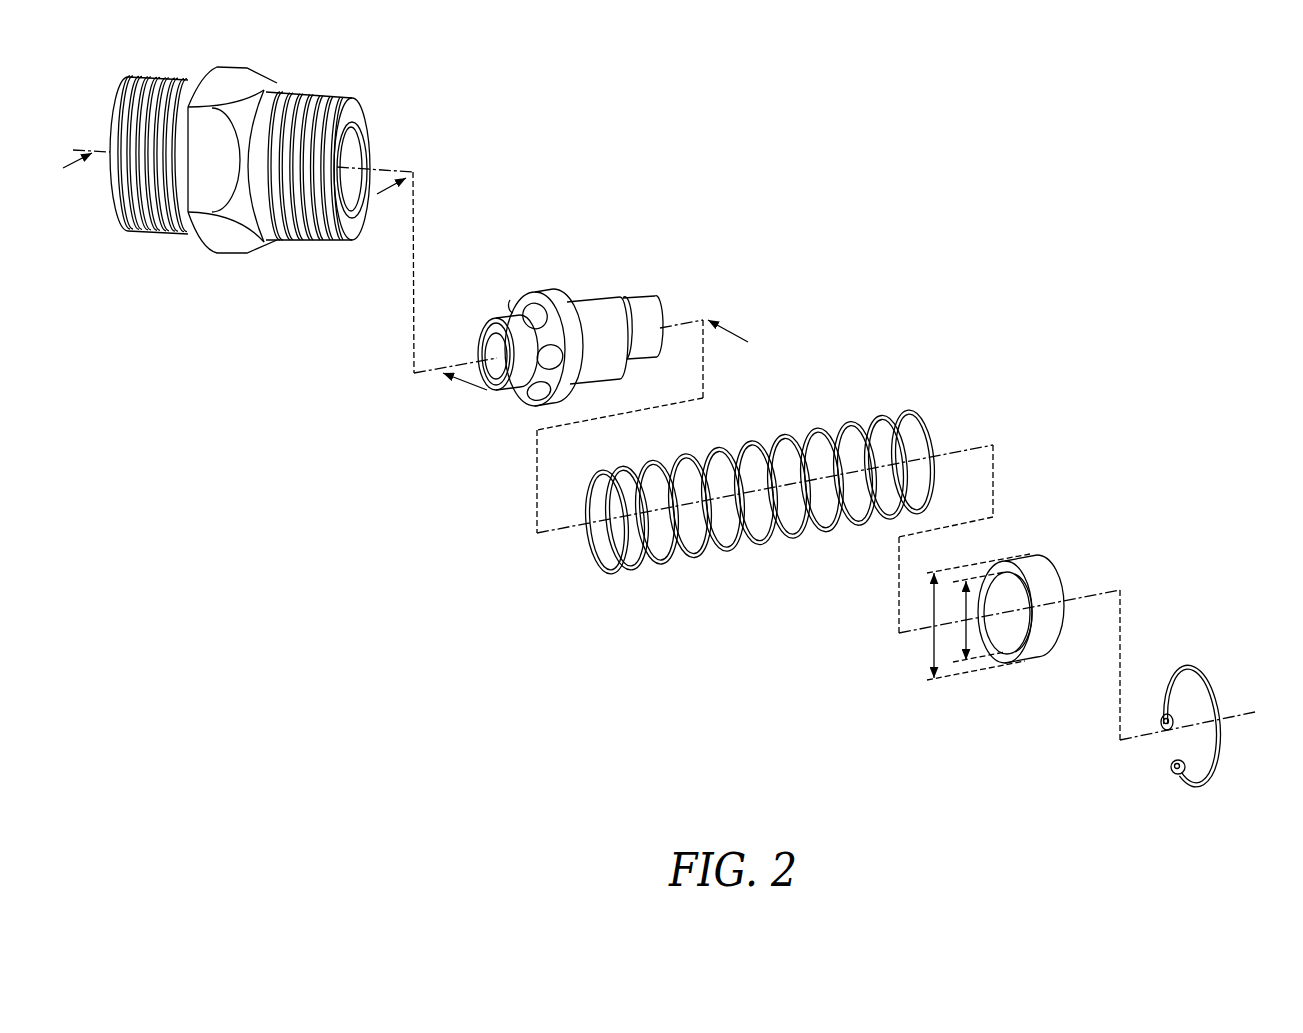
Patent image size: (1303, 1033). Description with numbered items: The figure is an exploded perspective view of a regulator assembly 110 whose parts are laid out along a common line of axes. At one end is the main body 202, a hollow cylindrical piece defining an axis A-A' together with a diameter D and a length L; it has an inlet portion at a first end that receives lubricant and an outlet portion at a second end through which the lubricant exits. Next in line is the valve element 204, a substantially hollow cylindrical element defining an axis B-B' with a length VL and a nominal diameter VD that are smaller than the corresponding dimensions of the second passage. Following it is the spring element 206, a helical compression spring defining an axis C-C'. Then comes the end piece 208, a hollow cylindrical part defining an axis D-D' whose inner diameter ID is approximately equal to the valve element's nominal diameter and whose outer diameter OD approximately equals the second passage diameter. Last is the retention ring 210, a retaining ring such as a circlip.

The regulator assembly 110 is at (1114, 201).
The main body 202 is at (325, 80).
The valve element 204 is at (585, 282).
The spring element 206 is at (849, 409).
The end piece 208 is at (1060, 551).
The retention ring 210 is at (1213, 662).